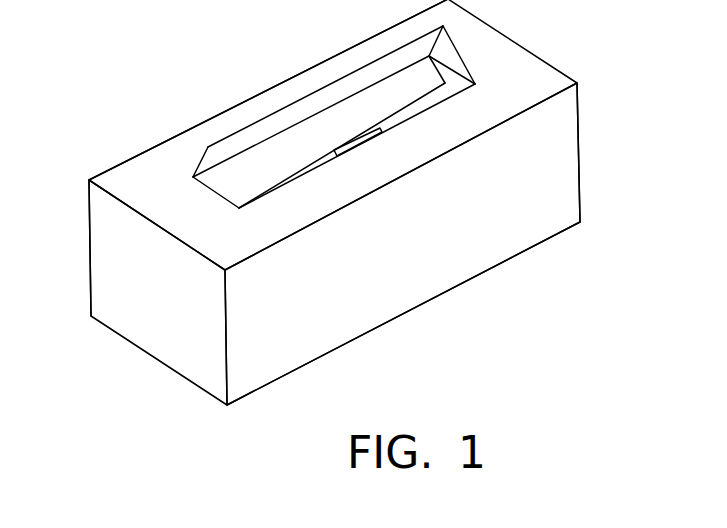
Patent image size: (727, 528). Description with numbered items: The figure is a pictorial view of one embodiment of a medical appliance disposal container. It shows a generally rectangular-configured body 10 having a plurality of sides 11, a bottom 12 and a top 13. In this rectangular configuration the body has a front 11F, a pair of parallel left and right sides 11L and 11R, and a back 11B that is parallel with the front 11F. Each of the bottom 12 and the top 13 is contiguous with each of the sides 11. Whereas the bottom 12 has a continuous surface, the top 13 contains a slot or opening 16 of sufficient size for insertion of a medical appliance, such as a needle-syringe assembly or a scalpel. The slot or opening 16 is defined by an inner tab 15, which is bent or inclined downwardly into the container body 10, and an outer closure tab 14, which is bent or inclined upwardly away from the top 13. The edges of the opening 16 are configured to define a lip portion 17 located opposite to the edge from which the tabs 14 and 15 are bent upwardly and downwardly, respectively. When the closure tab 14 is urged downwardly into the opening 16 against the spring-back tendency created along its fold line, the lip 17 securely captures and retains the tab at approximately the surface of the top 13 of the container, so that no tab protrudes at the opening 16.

The body 10 is at (341, 202).
The sides 11 is at (341, 202).
The front 11F is at (433, 264).
The left side 11L is at (169, 293).
The right side 11R is at (581, 115).
The back 11B is at (89, 226).
The bottom 12 is at (417, 307).
The top 13 is at (514, 82).
The outer closure tab 14 is at (344, 117).
The inner tab 15 is at (346, 131).
The slot or opening 16 is at (459, 78).
The lip portion 17 is at (372, 139).